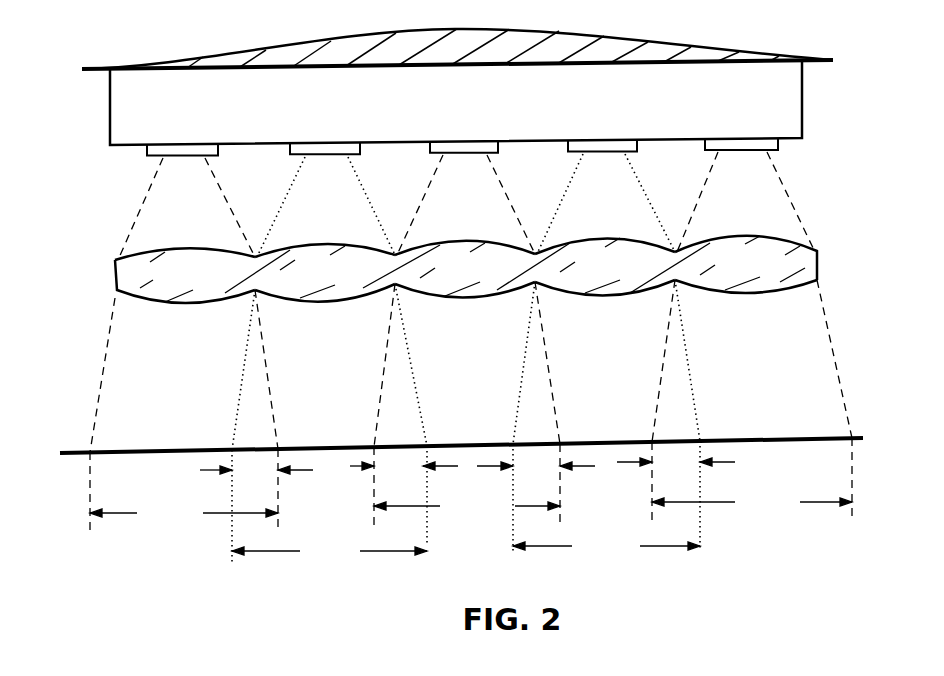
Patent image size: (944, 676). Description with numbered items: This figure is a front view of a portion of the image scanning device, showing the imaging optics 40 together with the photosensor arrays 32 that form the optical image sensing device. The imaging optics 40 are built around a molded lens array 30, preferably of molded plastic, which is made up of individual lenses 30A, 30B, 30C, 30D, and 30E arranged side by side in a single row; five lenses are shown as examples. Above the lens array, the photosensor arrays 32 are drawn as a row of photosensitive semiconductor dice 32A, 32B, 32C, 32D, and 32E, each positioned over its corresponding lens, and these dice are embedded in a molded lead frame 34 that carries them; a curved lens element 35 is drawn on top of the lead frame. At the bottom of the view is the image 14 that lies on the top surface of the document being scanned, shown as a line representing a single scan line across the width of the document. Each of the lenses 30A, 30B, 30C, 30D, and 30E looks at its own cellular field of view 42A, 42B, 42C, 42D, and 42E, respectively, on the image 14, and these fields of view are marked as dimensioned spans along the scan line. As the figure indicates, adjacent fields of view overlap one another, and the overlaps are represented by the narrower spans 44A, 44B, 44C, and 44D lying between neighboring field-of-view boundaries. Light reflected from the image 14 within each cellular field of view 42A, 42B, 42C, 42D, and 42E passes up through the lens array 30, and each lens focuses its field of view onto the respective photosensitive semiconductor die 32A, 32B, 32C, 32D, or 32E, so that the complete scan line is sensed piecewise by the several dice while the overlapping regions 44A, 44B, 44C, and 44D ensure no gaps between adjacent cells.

The image 14 is at (167, 450).
The lens array 30 is at (92, 272).
The lens 30A is at (172, 283).
The lens 30B is at (309, 279).
The lens 30C is at (449, 279).
The lens 30D is at (585, 274).
The lens 30E is at (728, 273).
The photosensor arrays 32 is at (128, 155).
The photosensitive semiconductor die 32A is at (153, 160).
The photosensitive semiconductor die 32B is at (290, 158).
The photosensitive semiconductor die 32C is at (430, 155).
The photosensitive semiconductor die 32D is at (568, 153).
The photosensitive semiconductor die 32E is at (705, 151).
The molded lead frame 34 is at (446, 114).
The lens 35 is at (441, 58).
The imaging optics 40 is at (70, 382).
The cellular field of view 42A is at (184, 513).
The cellular field of view 42B is at (329, 551).
The cellular field of view 42C is at (467, 506).
The cellular field of view 42D is at (606, 546).
The cellular field of view 42E is at (752, 502).
The overlap 44A is at (256, 470).
The overlap 44B is at (404, 466).
The overlap 44C is at (536, 466).
The overlap 44D is at (676, 462).